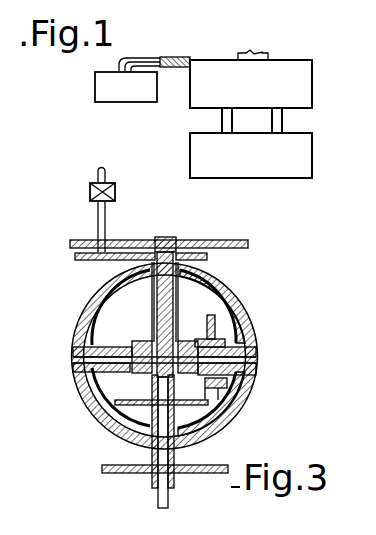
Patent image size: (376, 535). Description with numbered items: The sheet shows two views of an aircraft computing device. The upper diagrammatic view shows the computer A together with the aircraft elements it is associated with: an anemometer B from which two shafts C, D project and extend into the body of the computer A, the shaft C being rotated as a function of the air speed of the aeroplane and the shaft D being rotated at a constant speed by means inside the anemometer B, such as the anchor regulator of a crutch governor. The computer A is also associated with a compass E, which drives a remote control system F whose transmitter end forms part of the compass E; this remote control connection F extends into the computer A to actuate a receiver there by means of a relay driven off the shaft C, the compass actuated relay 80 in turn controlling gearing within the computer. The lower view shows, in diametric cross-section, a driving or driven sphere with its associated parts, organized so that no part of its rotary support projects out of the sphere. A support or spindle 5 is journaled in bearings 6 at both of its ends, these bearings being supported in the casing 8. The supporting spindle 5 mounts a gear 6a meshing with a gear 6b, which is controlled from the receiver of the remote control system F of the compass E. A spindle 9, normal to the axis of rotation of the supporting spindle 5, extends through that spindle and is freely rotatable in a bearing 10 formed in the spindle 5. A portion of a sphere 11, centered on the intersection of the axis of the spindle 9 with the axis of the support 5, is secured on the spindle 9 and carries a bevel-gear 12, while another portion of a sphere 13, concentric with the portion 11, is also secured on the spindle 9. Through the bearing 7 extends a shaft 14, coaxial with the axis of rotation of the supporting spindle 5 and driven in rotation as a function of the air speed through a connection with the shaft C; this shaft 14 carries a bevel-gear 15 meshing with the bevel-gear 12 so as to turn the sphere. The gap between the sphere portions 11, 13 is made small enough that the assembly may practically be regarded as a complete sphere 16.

In FIG. 1, the computer A is at (315, 80).
In FIG. 1, the anemometer B is at (308, 161).
In FIG. 1, the shaft C is at (222, 120).
In FIG. 1, the shaft D is at (283, 125).
In FIG. 1, the compass E is at (117, 95).
In FIG. 1, the remote control system F is at (167, 57).
In FIG. 3, the remote control system F is at (108, 174).
In FIG. 3, the compass actuated relay 80 is at (90, 192).
In FIG. 3, the casing 8 is at (93, 491).
In FIG. 3, the bearings 6 is at (158, 240).
In FIG. 3, the gear 6a is at (200, 261).
In FIG. 3, the gear 6b is at (75, 256).
In FIG. 3, the portion of a sphere 13 is at (94, 301).
In FIG. 3, the portion of a sphere 11 is at (238, 308).
In FIG. 3, the complete sphere 16 is at (237, 406).
In FIG. 3, the support or spindle 5 is at (157, 291).
In FIG. 3, the spindle 9 is at (247, 361).
In FIG. 3, the bearing 10 is at (152, 351).
In FIG. 3, the bevel-gear 12 is at (207, 330).
In FIG. 3, the bevel-gear 15 is at (124, 401).
In FIG. 3, the bearing 7 is at (178, 472).
In FIG. 3, the shaft 14 is at (168, 501).